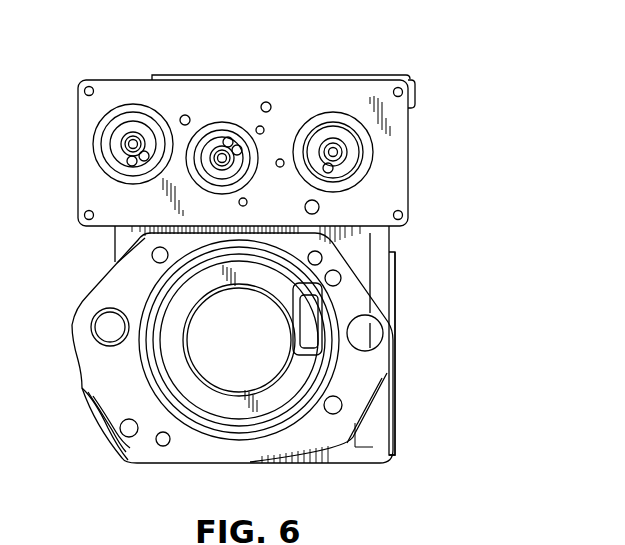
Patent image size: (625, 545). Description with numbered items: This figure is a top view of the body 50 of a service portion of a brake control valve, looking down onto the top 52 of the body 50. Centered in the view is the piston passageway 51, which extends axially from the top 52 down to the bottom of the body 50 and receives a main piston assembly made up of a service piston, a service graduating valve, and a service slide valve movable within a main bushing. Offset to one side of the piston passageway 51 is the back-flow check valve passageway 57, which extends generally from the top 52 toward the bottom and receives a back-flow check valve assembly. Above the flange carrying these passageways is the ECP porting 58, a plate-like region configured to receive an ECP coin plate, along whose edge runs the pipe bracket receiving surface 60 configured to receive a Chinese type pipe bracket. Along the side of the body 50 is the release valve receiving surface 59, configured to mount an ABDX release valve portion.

The body 50 is at (438, 197).
The piston passageway 51 is at (214, 357).
The top 52 is at (377, 357).
The back-flow check valve passageway 57 is at (110, 327).
The ECP porting 58 is at (228, 96).
The release valve receiving surface 59 is at (397, 425).
The pipe bracket receiving surface 60 is at (167, 76).